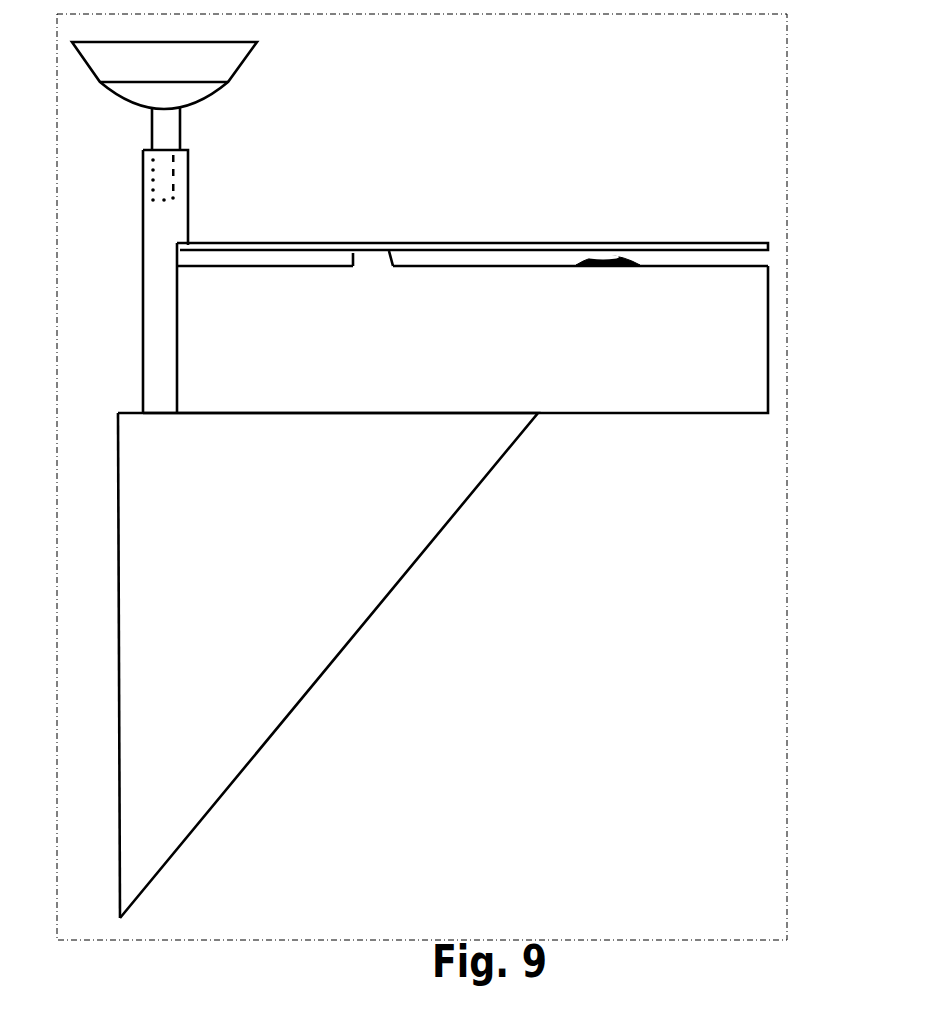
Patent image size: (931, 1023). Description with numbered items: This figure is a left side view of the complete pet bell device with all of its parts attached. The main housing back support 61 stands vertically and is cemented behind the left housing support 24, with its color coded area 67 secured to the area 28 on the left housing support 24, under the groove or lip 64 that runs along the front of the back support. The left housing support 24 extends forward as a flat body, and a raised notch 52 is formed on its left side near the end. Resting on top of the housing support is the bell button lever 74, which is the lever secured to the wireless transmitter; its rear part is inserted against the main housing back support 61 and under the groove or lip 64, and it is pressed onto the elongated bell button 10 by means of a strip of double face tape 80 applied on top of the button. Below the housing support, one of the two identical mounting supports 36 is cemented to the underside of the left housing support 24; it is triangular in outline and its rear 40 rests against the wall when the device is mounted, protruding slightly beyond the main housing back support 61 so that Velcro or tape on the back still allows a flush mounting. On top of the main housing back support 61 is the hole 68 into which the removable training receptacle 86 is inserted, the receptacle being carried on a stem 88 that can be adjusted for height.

The elongated bell button 10 is at (625, 258).
The left housing support 24 is at (368, 357).
The area on left housing support to be cemented to another part 28 is at (180, 353).
The mounting support 36 is at (278, 578).
The rear of mounting support 40 is at (118, 640).
The raised notch on left side 52 is at (373, 262).
The main housing back support 61 is at (168, 225).
The groove or lip along front of main housing back support 64 is at (173, 250).
The color coded area on left side of main housing back support 67 is at (177, 358).
The hole to insert the removable training receptacle 68 is at (163, 175).
The bell button lever 74 is at (767, 250).
The double face tape 80 is at (617, 258).
The training receptacle 86 is at (197, 62).
The stem of removable training receptacle 88 is at (167, 127).